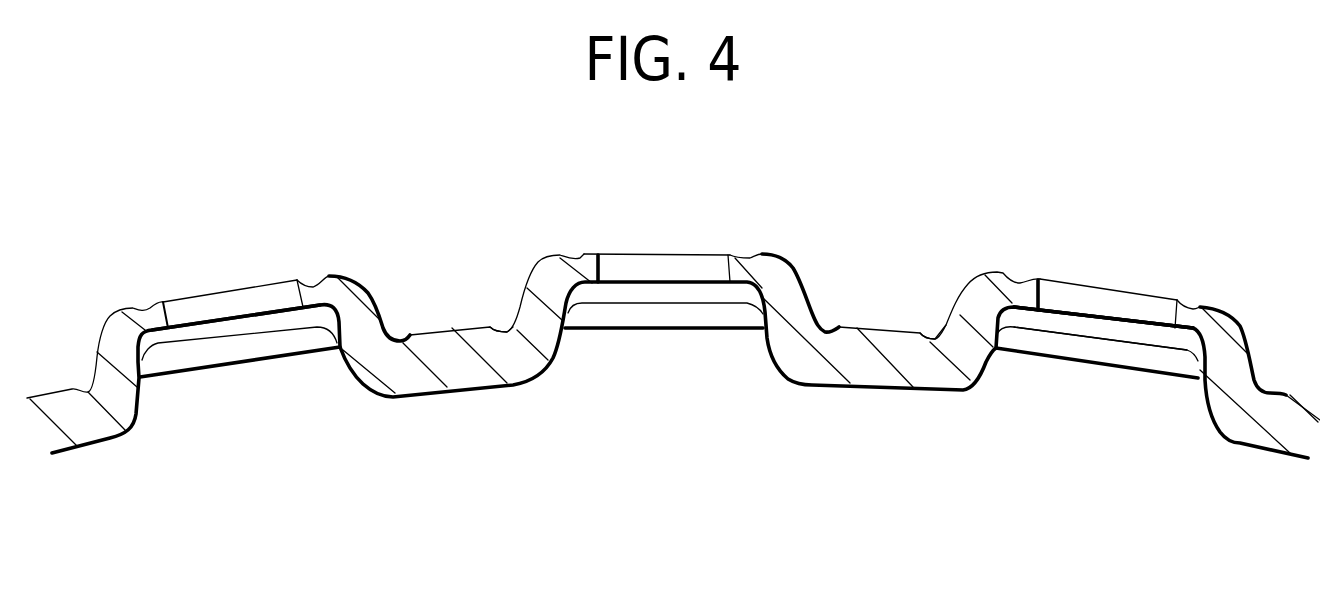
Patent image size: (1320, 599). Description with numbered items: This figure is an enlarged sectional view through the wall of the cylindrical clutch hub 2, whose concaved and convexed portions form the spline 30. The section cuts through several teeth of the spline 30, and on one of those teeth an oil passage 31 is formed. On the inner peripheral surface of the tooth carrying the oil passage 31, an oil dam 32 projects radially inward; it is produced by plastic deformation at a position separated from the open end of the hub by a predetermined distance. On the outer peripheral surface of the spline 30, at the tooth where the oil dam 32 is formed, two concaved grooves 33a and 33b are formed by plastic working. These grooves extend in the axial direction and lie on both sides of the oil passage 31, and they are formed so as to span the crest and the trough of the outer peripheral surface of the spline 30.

The clutch hub 2 is at (683, 383).
The spline 30 is at (350, 273).
The oil passage 31 is at (1070, 292).
The oil dam 32 is at (1052, 322).
The concaved groove 33a is at (582, 255).
The concaved groove 33b is at (505, 327).